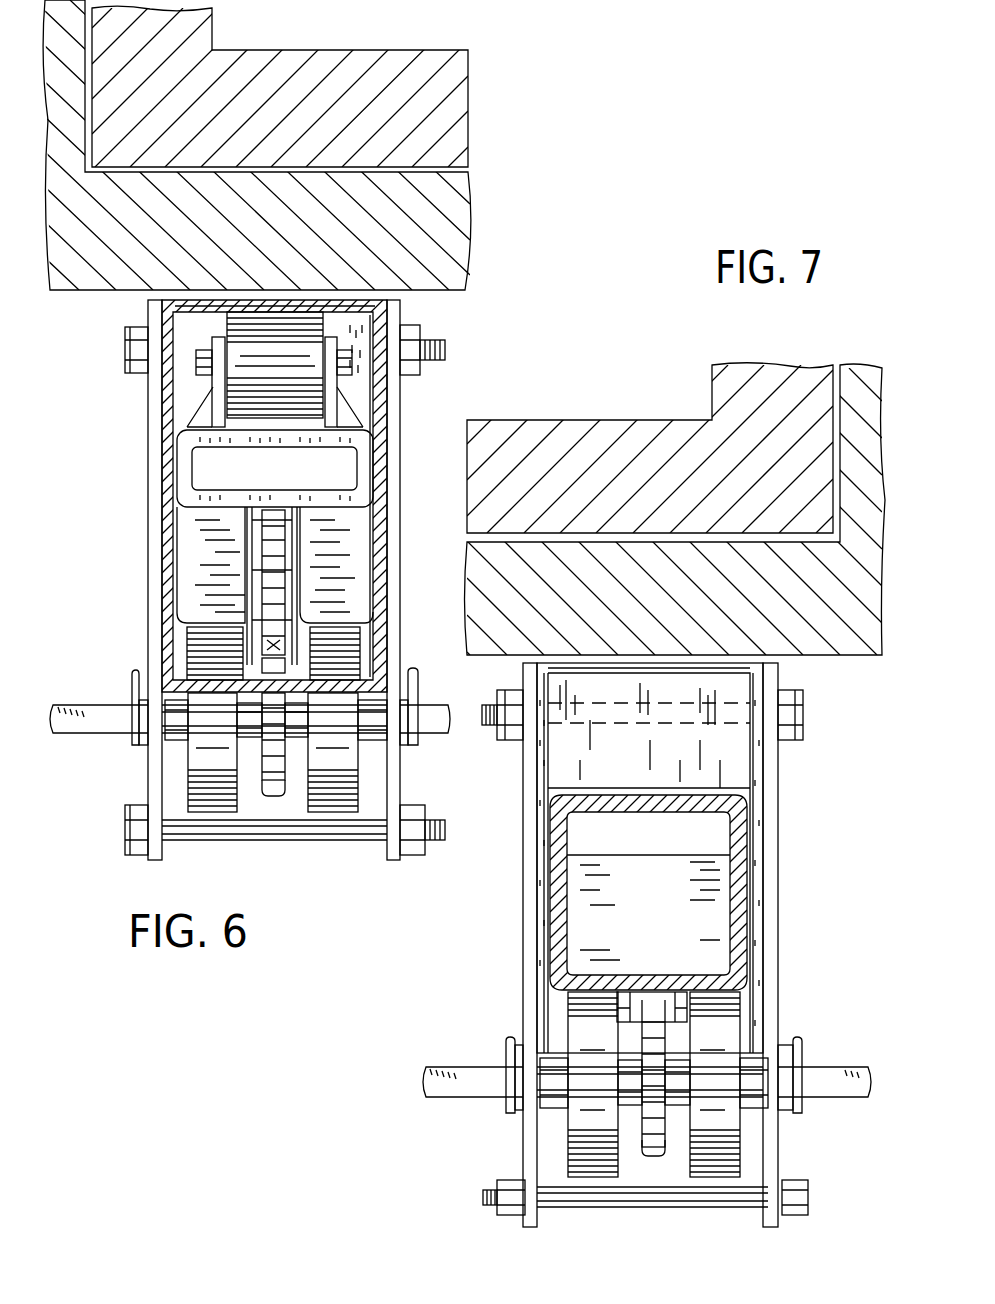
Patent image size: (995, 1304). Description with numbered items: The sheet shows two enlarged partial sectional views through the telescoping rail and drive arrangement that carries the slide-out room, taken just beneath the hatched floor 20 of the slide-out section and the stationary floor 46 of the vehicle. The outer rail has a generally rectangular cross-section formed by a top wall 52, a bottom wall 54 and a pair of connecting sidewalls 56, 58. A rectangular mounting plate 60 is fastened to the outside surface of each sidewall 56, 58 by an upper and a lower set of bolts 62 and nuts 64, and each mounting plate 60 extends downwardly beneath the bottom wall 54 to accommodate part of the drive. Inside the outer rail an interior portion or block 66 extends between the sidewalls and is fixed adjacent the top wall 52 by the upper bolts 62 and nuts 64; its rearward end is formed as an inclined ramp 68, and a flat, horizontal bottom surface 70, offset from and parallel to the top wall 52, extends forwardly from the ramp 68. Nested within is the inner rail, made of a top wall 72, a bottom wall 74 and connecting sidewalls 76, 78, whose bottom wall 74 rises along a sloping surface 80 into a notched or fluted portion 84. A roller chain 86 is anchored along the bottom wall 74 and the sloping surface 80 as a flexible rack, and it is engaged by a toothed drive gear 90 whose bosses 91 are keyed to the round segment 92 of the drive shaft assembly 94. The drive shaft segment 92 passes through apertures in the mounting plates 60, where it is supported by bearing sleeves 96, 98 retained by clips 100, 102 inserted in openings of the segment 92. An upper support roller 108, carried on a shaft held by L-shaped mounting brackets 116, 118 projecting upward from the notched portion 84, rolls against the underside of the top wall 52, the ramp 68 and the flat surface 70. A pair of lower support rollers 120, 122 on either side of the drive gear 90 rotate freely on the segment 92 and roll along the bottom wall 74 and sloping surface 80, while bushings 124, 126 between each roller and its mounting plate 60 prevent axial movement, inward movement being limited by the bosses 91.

In FIG. 6, the bottom wall or floor 20 is at (350, 72).
In FIG. 7, the bottom wall or floor 20 is at (600, 445).
In FIG. 6, the stationary floor 46 is at (460, 245).
In FIG. 7, the stationary floor 46 is at (850, 640).
In FIG. 6, the top wall 52 is at (258, 300).
In FIG. 7, the top wall 52 is at (668, 663).
In FIG. 6, the bottom wall 54 is at (340, 660).
In FIG. 6, the sidewall 56 is at (165, 520).
In FIG. 7, the sidewall 56 is at (772, 905).
In FIG. 6, the sidewall 58 is at (385, 530).
In FIG. 7, the sidewall 58 is at (535, 915).
In FIG. 6, the mounting plate 60 is at (393, 590).
In FIG. 7, the mounting plate 60 is at (780, 860).
In FIG. 6, the bolts 62 is at (128, 372).
In FIG. 7, the bolts 62 is at (805, 715).
In FIG. 6, the nuts 64 is at (430, 365).
In FIG. 7, the nuts 64 is at (505, 742).
In FIG. 7, the interior portion or block 66 is at (760, 765).
In FIG. 6, the inclined ramp 68 is at (358, 330).
In FIG. 7, the flat, horizontal bottom surface 70 is at (752, 785).
In FIG. 6, the top wall 72 is at (262, 445).
In FIG. 7, the top wall 72 is at (668, 805).
In FIG. 7, the bottom wall 74 is at (660, 995).
In FIG. 7, the sidewall 76 is at (575, 945).
In FIG. 7, the sidewall 78 is at (725, 912).
In FIG. 6, the sloping surface 80 is at (180, 572).
In FIG. 6, the notched or fluted portion 84 is at (370, 480).
In FIG. 7, the notched or fluted portion 84 is at (660, 880).
In FIG. 6, the roller chain 86 is at (292, 590).
In FIG. 7, the roller chain 86 is at (680, 1000).
In FIG. 7, the drive gear or toothed sprocket 90 is at (655, 1158).
In FIG. 6, the bosses 91 is at (248, 725).
In FIG. 7, the bosses 91 is at (630, 1082).
In FIG. 6, the round segment of drive shaft 92 is at (110, 725).
In FIG. 7, the round segment of drive shaft 92 is at (647, 1082).
In FIG. 6, the drive shaft assembly 94 is at (62, 698).
In FIG. 7, the drive shaft assembly 94 is at (420, 1056).
In FIG. 6, the bearing sleeve 96 is at (143, 745).
In FIG. 7, the bearing sleeve 96 is at (790, 1050).
In FIG. 6, the bearing sleeve 98 is at (410, 745).
In FIG. 7, the bearing sleeve 98 is at (515, 1050).
In FIG. 6, the clip 100 is at (133, 670).
In FIG. 7, the clip 100 is at (803, 1058).
In FIG. 6, the clip 102 is at (415, 670).
In FIG. 7, the clip 102 is at (505, 1048).
In FIG. 6, the upper support roller 108 is at (300, 340).
In FIG. 6, the L-shaped mounting bracket 116 is at (195, 395).
In FIG. 6, the L-shaped mounting bracket 118 is at (355, 398).
In FIG. 6, the lower support roller 120 is at (225, 795).
In FIG. 7, the lower support roller 120 is at (722, 1165).
In FIG. 6, the lower support roller 122 is at (333, 795).
In FIG. 7, the lower support roller 122 is at (603, 1165).
In FIG. 6, the bushing 124 is at (180, 748).
In FIG. 7, the bushing 124 is at (760, 1112).
In FIG. 6, the bushing 126 is at (375, 745).
In FIG. 7, the bushing 126 is at (550, 1110).